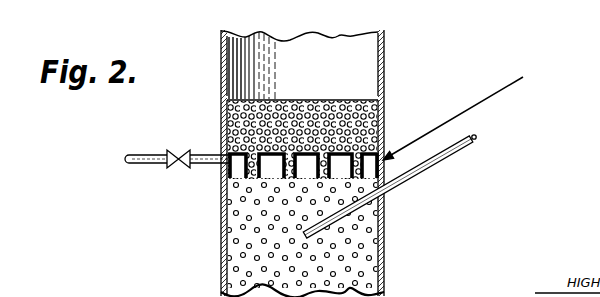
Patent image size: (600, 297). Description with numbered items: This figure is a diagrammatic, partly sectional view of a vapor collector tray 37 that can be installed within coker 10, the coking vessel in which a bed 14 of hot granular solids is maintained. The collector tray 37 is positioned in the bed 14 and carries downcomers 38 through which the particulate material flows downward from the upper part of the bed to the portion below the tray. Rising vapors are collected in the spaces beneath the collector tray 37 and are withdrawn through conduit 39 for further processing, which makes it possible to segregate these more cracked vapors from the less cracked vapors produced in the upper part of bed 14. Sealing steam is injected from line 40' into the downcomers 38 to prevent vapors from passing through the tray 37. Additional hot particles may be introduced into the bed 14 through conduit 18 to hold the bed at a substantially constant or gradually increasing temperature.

The coker 10 is at (385, 46).
The bed 14 is at (311, 273).
The conduit 18 is at (441, 163).
The collector tray 37 is at (273, 165).
The downcomers 38 is at (280, 173).
The conduit 39 is at (151, 156).
The line 40' is at (462, 112).